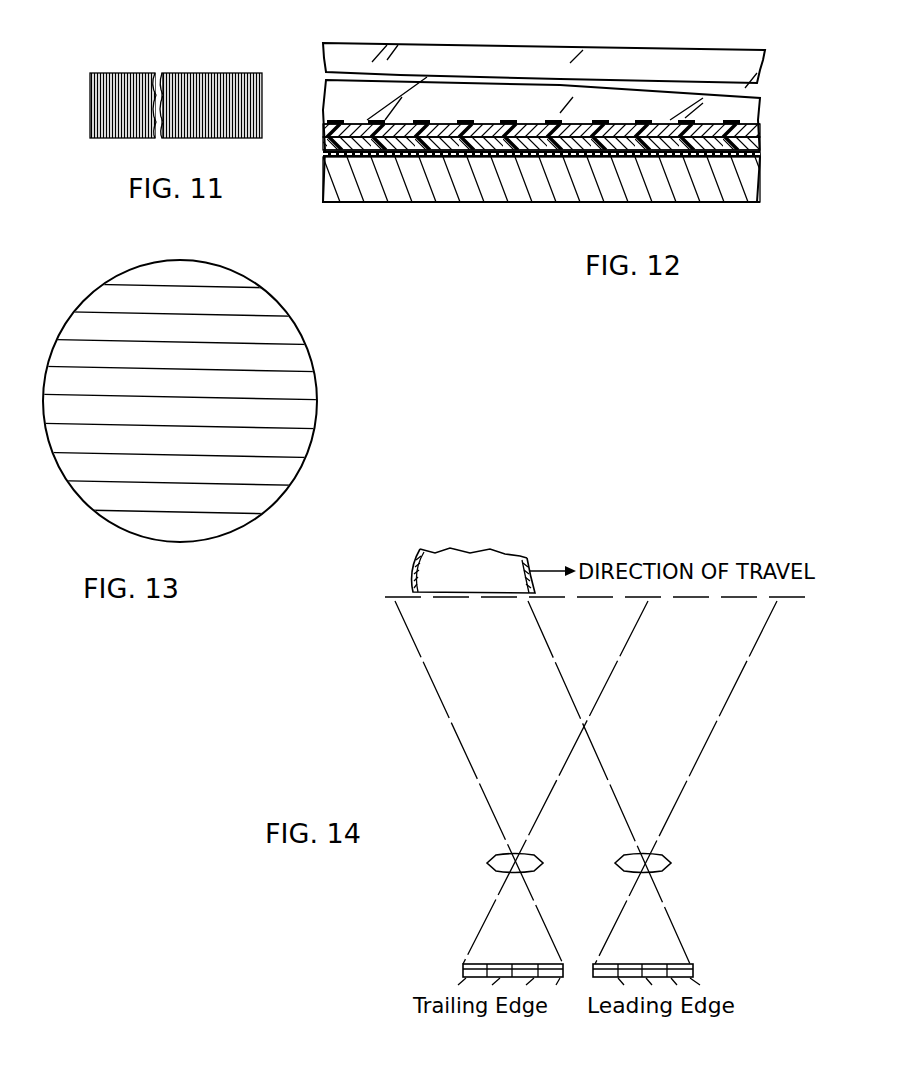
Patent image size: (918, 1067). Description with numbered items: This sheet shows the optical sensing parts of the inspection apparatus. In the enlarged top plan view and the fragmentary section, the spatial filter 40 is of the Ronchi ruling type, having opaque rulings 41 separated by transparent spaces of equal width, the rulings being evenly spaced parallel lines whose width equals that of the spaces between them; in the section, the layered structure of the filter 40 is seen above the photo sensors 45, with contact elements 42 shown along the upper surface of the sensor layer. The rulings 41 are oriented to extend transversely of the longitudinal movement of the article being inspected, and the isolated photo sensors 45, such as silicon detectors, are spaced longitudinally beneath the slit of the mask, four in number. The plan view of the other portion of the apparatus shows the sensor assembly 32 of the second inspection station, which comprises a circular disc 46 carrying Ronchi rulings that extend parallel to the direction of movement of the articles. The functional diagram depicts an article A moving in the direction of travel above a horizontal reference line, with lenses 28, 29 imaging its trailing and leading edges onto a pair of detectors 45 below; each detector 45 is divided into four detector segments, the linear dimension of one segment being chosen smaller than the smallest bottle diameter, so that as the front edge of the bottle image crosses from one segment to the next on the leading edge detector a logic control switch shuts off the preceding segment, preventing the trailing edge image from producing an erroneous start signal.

In FIG. 11, the spatial filter 40 is at (266, 56).
In FIG. 12, the spatial filter 40 is at (763, 71).
In FIG. 12, the opaque rulings 41 is at (740, 128).
In FIG. 12, the contact pads 42 is at (713, 128).
In FIG. 12, the photo sensors 45 is at (374, 156).
In FIG. 14, the photo sensors 45 is at (467, 951).
In FIG. 13, the circular disc 46 is at (102, 295).
In FIG. 13, the sensor assembly 32 is at (204, 401).
In FIG. 14, the object (document) A is at (529, 566).
In FIG. 14, the lens 28 is at (498, 857).
In FIG. 14, the lens 29 is at (673, 860).